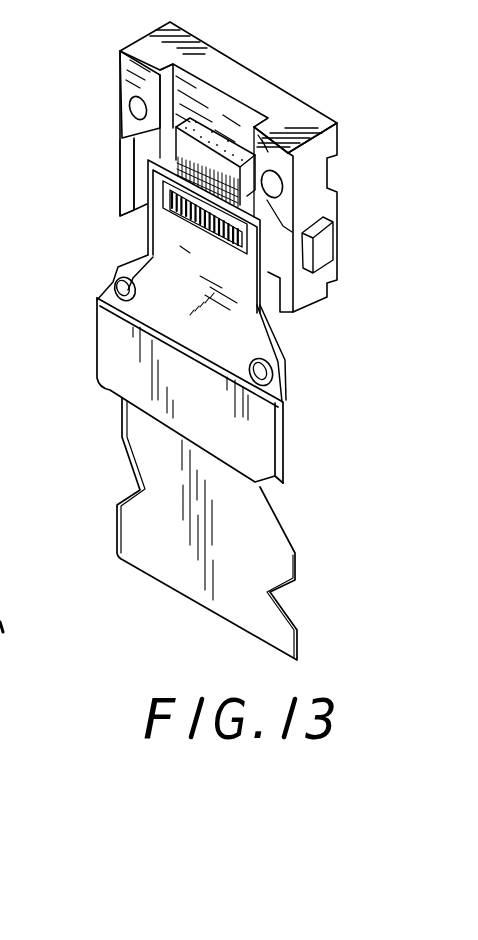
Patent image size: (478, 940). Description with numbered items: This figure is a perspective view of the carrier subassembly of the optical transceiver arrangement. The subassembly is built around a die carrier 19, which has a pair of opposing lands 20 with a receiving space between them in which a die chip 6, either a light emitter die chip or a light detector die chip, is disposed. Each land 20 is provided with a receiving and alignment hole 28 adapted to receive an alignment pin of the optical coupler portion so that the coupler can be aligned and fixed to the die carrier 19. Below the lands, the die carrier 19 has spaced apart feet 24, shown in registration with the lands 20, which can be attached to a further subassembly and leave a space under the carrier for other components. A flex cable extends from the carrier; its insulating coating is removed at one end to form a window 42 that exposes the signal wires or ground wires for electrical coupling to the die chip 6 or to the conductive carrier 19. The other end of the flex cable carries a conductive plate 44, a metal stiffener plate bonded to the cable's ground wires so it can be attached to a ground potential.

The opposing lands 20 is at (118, 73).
The receiving and alignment hole 28 is at (135, 110).
The feet 24 is at (140, 200).
The die chip 6 is at (208, 130).
The die carrier 19 is at (320, 207).
The window 42 is at (200, 221).
The conductive plate 44 is at (110, 337).